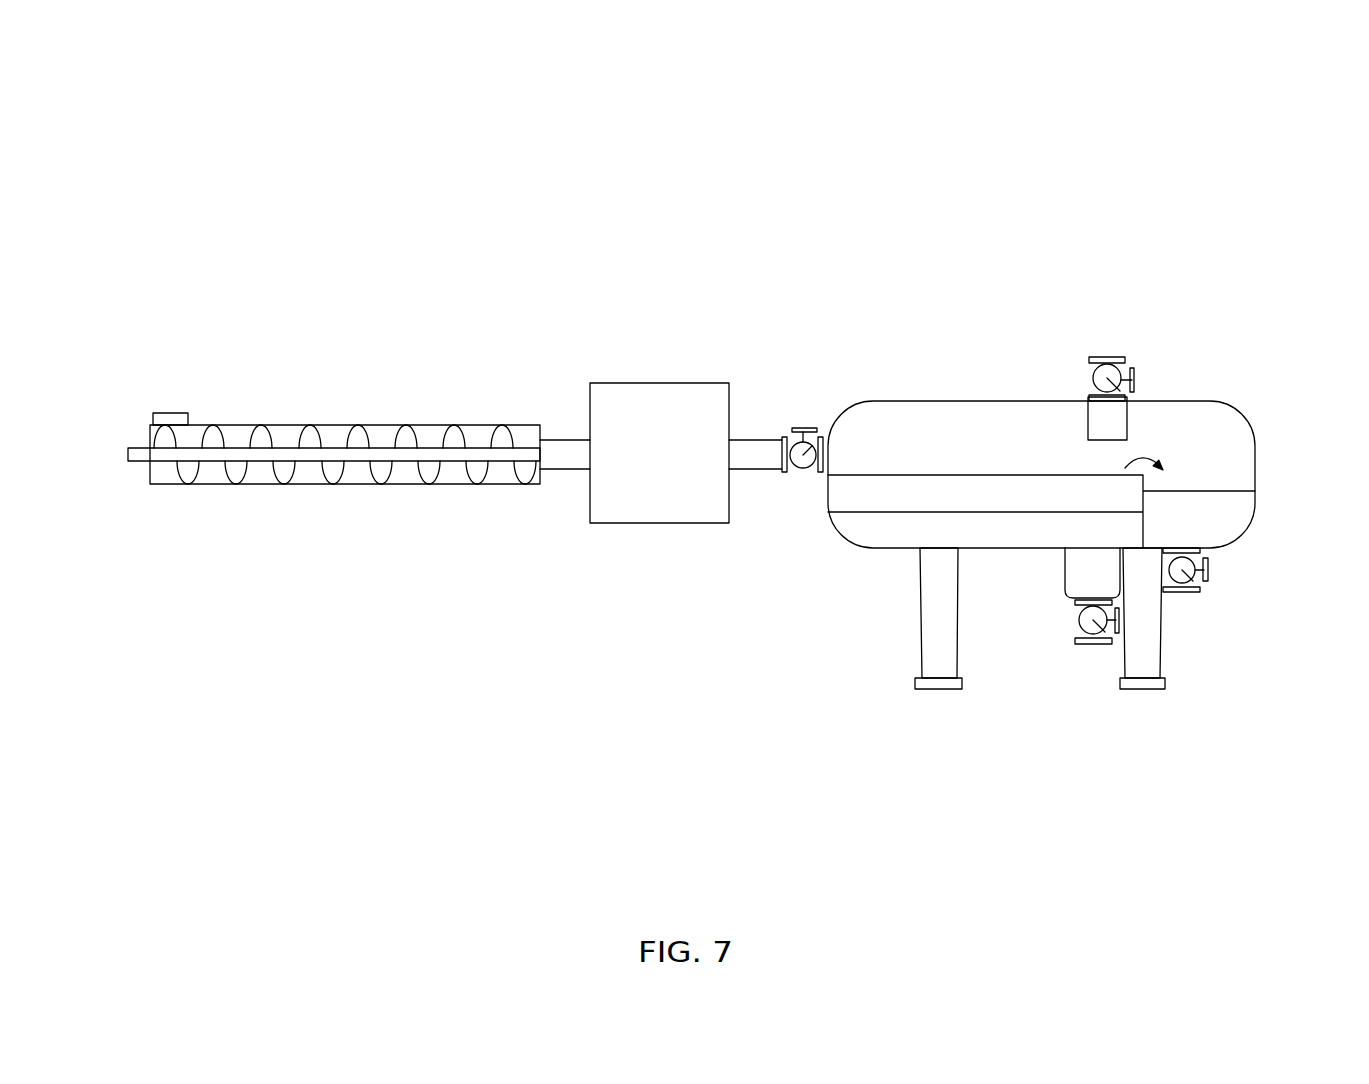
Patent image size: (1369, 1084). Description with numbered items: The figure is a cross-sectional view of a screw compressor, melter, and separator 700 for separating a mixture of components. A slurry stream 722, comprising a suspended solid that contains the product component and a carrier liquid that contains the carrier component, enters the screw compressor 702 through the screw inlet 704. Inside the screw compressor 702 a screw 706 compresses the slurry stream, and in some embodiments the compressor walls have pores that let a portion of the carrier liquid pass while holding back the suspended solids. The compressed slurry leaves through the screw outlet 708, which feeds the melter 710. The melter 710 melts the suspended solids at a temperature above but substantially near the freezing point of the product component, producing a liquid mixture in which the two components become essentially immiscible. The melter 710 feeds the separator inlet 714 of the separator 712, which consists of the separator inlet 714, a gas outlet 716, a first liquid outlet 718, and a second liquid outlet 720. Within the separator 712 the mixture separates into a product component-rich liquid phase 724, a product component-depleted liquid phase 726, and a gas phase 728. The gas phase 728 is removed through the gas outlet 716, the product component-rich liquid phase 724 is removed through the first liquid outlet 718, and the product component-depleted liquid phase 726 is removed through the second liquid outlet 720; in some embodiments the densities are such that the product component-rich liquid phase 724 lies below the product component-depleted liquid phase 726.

The screw compressor, melter, and separator 700 is at (184, 91).
The screw compressor 702 is at (280, 425).
The screw inlet 704 is at (155, 415).
The screw 706 is at (314, 438).
The screw outlet 708 is at (572, 440).
The melter 710 is at (660, 383).
The separator 712 is at (964, 401).
The separator inlet 714 is at (775, 440).
The gas outlet 716 is at (1127, 393).
The first liquid outlet 718 is at (1205, 583).
The second liquid outlet 720 is at (1087, 614).
The slurry stream 722 is at (172, 400).
The product component-rich liquid phase 724 is at (847, 503).
The product component-depleted liquid phase 726 is at (893, 548).
The gas phase 728 is at (1107, 357).